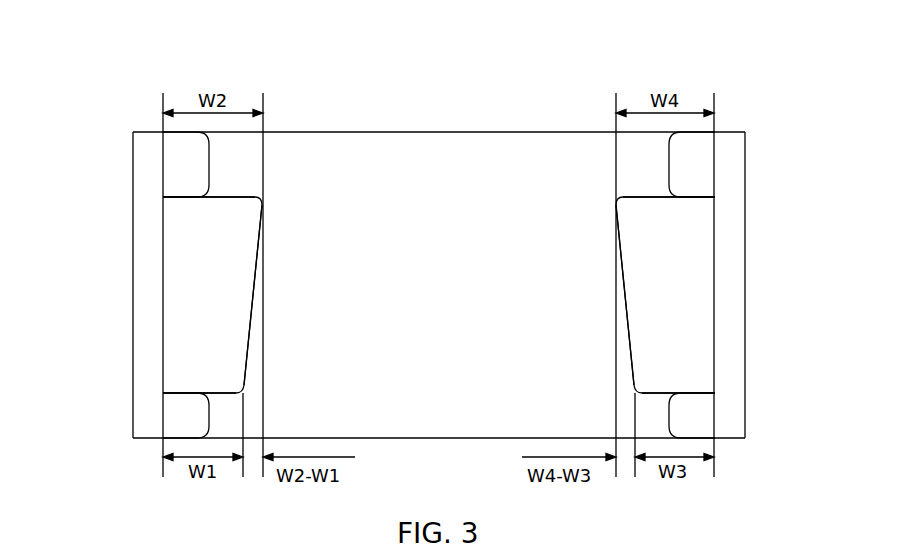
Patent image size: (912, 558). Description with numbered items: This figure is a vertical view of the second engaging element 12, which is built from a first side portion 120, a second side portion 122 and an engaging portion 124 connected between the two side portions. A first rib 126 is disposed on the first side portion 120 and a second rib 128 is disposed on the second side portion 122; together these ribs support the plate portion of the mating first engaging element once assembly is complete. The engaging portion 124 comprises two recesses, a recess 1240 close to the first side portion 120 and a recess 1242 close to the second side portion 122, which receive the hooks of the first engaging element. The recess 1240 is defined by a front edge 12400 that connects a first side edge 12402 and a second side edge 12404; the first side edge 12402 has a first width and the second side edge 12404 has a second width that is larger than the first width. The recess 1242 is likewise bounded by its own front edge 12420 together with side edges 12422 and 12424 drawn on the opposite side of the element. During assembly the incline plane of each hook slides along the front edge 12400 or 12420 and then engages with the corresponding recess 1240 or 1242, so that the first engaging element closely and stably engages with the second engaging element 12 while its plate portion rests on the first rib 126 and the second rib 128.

The second engaging element 12 is at (460, 69).
The first side portion 120 is at (132, 159).
The second side portion 122 is at (745, 143).
The engaging portion 124 is at (370, 131).
The first rib 126 is at (190, 169).
The second rib 128 is at (693, 165).
The recess 1240 is at (205, 293).
The front edge 12400 is at (253, 303).
The first side edge 12402 is at (217, 391).
The second side edge 12404 is at (228, 198).
The recess 1242 is at (700, 286).
The front edge 12420 is at (626, 308).
The second lower edge 12422 is at (660, 392).
The second upper edge 12424 is at (650, 197).